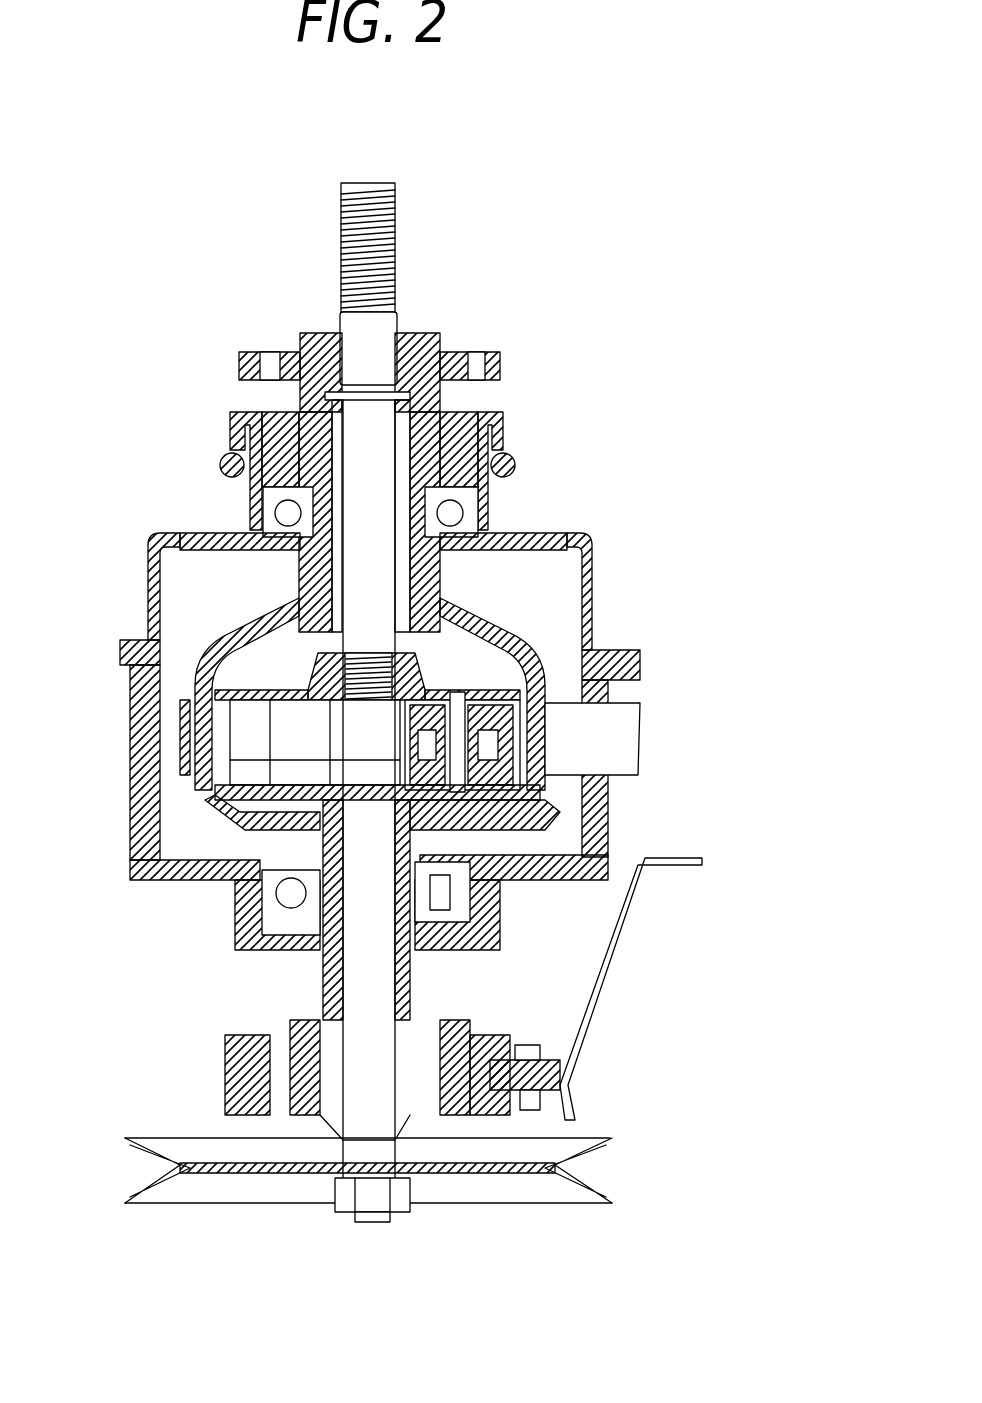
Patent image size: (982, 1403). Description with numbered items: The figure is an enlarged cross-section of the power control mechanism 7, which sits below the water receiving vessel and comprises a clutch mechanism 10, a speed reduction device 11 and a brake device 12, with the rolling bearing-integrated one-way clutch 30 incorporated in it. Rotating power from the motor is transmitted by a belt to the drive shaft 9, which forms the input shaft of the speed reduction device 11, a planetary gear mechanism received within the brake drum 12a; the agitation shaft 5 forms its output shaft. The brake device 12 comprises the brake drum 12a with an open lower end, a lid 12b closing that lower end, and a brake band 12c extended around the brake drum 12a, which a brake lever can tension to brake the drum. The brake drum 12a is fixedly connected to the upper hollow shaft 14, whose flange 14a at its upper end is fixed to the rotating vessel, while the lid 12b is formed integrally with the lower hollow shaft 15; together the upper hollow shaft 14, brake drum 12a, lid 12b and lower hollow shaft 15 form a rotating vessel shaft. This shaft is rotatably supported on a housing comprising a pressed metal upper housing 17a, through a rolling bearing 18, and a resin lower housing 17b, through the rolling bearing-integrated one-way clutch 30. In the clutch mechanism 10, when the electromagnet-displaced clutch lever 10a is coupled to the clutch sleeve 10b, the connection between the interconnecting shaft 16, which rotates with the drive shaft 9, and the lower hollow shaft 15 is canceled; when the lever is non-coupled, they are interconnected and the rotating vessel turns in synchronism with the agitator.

The agitation shaft 5 is at (372, 332).
The flange 14a is at (495, 355).
The upper hollow shaft 14 is at (440, 413).
The lower hollow shaft 15 is at (330, 1005).
The rolling bearing 18 is at (292, 528).
The upper housing 17a is at (577, 543).
The lower housing 17b is at (150, 875).
The power control mechanism 7 is at (650, 632).
The brake drum 12a is at (488, 605).
The speed reduction device 11 is at (268, 678).
The brake device 12 is at (662, 722).
The brake band 12c is at (597, 745).
The lid 12b is at (495, 818).
The rolling bearing-integrated one-way clutch 30 is at (303, 928).
The drive shaft 9 is at (372, 995).
The clutch mechanism 10 is at (195, 1102).
The clutch sleeve 10b is at (280, 1125).
The clutch lever 10a is at (607, 982).
The interconnecting shaft 16 is at (340, 1170).